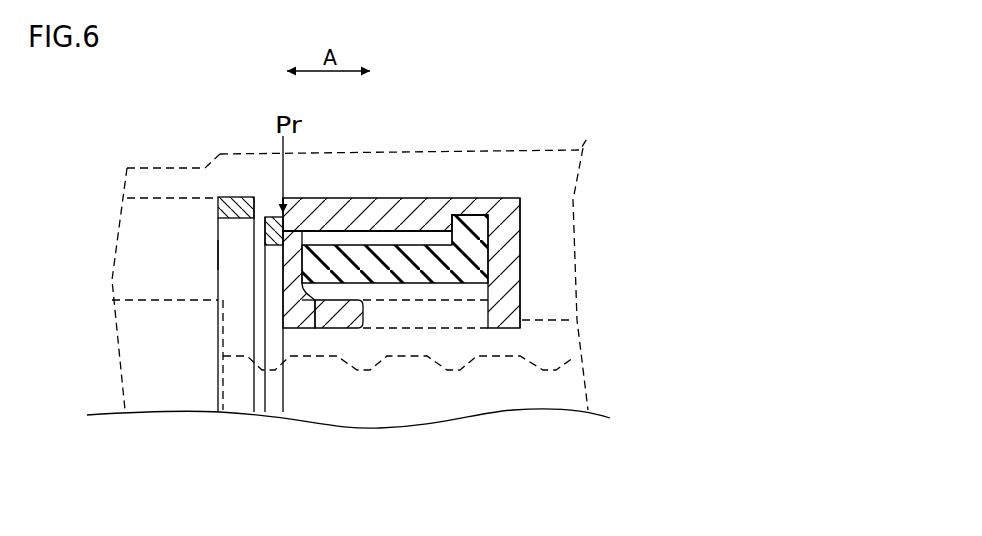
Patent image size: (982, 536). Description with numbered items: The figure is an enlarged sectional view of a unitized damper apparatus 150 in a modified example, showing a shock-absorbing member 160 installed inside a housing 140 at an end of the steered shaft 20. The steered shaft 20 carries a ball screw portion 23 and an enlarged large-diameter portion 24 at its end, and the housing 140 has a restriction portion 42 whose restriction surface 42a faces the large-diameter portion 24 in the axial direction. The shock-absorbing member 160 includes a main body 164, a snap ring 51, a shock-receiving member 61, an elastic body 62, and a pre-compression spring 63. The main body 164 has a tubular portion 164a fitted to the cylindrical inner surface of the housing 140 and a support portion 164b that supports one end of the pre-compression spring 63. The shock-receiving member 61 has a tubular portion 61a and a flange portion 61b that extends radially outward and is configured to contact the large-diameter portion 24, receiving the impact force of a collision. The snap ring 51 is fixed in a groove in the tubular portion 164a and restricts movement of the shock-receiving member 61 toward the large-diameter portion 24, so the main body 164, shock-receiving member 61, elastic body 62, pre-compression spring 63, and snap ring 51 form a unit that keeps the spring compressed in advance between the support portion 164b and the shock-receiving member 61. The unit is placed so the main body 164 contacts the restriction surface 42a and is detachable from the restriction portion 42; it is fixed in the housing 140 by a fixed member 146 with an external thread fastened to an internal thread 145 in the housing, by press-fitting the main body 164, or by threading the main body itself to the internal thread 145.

The damper apparatus 150 is at (103, 156).
The housing 140 is at (545, 142).
The shock-absorbing member 160 is at (212, 253).
The large-diameter portion 24 is at (135, 304).
The steered shaft 20 is at (590, 372).
The ball screw portion 23 is at (500, 380).
The internal thread 145 is at (216, 259).
The fixed member 146 is at (233, 197).
The snap ring 51 is at (268, 205).
The restriction portion 42 is at (463, 263).
The restriction surface 42a is at (522, 238).
The elastic body 62 is at (350, 253).
The main body 164 is at (523, 114).
The tubular portion 164a is at (418, 228).
The support portion 164b is at (482, 292).
The shock-receiving member 61 is at (325, 371).
The tubular portion 61a is at (332, 330).
The flange portion 61b is at (313, 330).
The pre-compression spring 63 is at (418, 332).